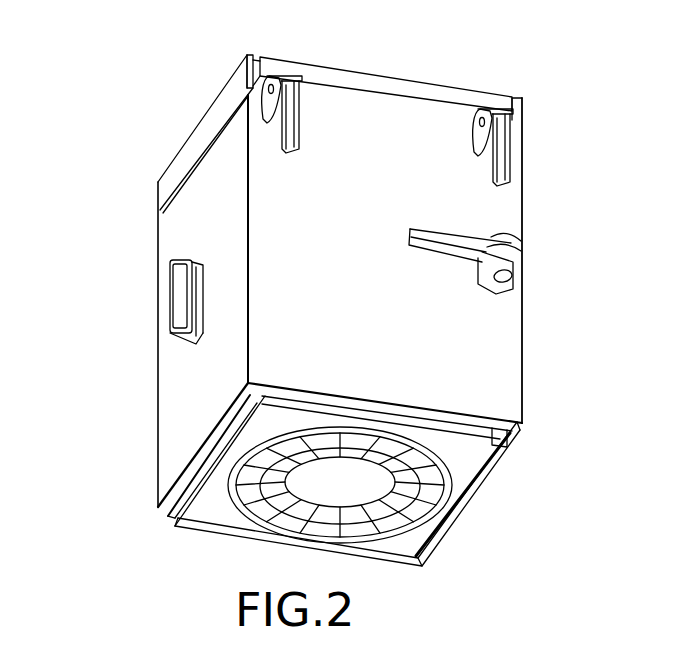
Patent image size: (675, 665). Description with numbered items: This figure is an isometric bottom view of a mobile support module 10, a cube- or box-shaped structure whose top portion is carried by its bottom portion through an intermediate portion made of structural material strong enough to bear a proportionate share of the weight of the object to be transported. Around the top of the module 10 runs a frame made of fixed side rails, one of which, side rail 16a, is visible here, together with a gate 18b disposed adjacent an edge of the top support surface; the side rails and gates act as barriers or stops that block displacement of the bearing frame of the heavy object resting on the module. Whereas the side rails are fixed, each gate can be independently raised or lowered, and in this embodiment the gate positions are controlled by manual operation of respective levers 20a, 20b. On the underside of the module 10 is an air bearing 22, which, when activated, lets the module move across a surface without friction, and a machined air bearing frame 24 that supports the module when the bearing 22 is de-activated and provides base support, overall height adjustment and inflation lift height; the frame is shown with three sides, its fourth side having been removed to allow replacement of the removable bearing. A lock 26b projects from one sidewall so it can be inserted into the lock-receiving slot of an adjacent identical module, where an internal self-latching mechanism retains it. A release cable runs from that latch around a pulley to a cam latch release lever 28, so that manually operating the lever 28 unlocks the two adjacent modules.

The mobile support module 10 is at (172, 96).
The side rail 16a is at (410, 88).
The gate 18b is at (182, 152).
The lever 20a is at (503, 165).
The lever 20b is at (293, 95).
The air bearing 22 is at (430, 488).
The air bearing frame 24 is at (208, 472).
The lock 26b is at (170, 300).
The cam latch release lever 28 is at (475, 235).